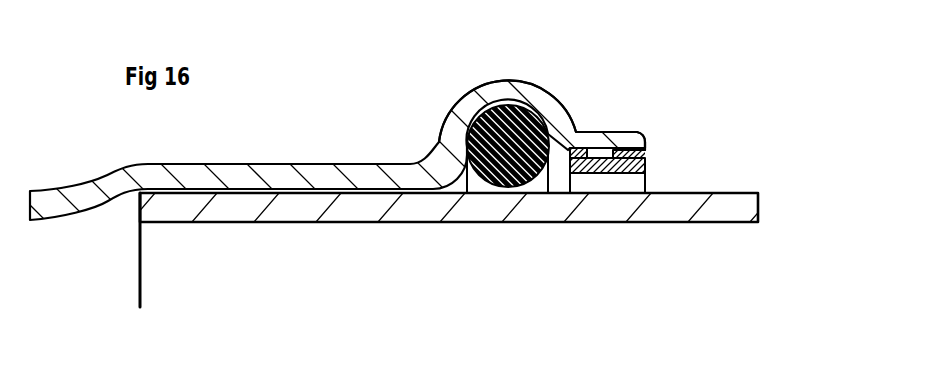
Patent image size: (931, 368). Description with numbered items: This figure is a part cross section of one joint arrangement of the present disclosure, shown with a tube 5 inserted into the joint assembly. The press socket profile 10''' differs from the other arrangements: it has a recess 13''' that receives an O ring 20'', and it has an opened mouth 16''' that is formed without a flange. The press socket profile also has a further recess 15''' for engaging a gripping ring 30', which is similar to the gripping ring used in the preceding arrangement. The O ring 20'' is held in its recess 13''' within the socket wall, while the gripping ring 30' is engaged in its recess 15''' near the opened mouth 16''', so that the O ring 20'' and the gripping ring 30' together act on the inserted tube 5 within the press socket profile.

The tube 5 is at (712, 205).
The flexible film / membrane 10''' is at (465, 184).
The recess 13''' is at (507, 73).
The O ring 20'' is at (513, 118).
The recess 15''' is at (613, 103).
The gripping ring 30' is at (635, 121).
The opened mouth 16''' is at (699, 144).